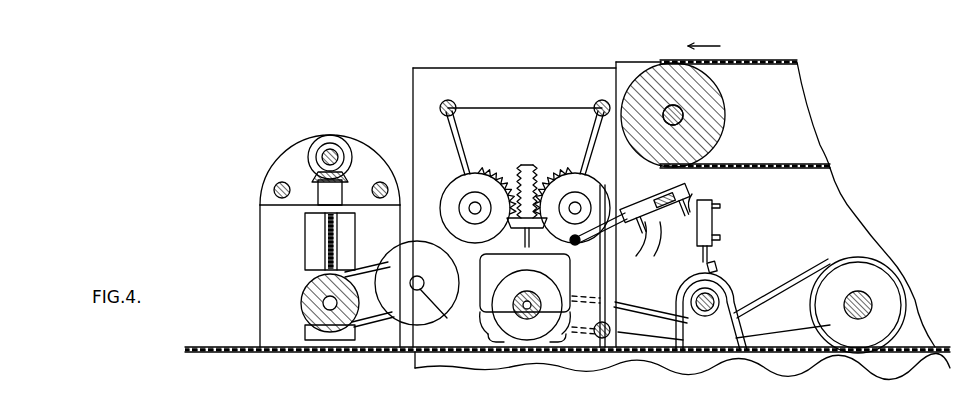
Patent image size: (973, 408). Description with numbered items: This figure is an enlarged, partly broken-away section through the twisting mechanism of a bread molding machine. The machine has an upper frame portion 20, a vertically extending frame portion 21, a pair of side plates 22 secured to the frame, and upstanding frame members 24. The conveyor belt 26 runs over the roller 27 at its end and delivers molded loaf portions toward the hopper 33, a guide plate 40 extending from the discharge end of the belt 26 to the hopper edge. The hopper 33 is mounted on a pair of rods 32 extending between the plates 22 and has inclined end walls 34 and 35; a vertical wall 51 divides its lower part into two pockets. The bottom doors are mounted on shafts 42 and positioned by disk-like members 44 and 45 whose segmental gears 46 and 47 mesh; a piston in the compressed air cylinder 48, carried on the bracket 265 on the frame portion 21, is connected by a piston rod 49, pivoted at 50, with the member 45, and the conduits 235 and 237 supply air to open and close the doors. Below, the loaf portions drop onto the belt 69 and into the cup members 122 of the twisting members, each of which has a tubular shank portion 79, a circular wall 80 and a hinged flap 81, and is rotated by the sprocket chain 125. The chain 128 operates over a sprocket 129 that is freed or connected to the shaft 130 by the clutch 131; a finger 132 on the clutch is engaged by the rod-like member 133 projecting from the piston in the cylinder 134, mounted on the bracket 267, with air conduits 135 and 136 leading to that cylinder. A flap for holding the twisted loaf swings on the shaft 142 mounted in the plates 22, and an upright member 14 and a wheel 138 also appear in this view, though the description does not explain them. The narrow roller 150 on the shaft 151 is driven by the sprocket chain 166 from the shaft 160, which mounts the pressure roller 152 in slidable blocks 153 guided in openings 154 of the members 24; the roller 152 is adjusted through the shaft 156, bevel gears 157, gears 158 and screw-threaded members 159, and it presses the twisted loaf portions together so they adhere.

The slide bar 14 is at (600, 282).
The upper frame portion 20 is at (630, 72).
The vertically extending frame portion 21 is at (848, 222).
The side plates 22 is at (444, 78).
The upstanding frame members 24 is at (272, 250).
The conveyor belt 26 is at (735, 60).
The roller 27 is at (702, 90).
The rods 32 is at (440, 108).
The hopper 33 is at (472, 106).
The inclined end wall 34 is at (460, 152).
The inclined end wall 35 is at (588, 152).
The guide plate 40 is at (615, 68).
The shafts 42 is at (470, 208).
The disk-like member 44 is at (460, 197).
The disk-like member 45 is at (587, 190).
The segmental gear 46 is at (516, 170).
The segmental gear 47 is at (531, 168).
The compressed air cylinder 48 is at (666, 191).
The piston rod 49 is at (624, 214).
The pivot 50 is at (577, 245).
The vertical wall 51 is at (522, 243).
The belt 69 is at (328, 353).
The tubular shank portion 79 is at (542, 342).
The upstanding circular wall 80 is at (527, 342).
The flap 81 is at (496, 278).
The cup members 122 is at (496, 345).
The sprocket chain 125 is at (805, 269).
The chain 128 is at (738, 329).
The sprocket 129 is at (696, 303).
The shaft 130 is at (700, 297).
The clutch 131 is at (733, 292).
The finger 132 is at (716, 267).
The rod-like member 133 is at (710, 254).
The cylinder 134 is at (712, 222).
The air conduit 135 is at (716, 205).
The air conduit 136 is at (716, 238).
The pulley 138 is at (884, 292).
The shaft 142 is at (604, 340).
The narrow roller 150 is at (396, 257).
The shaft 151 is at (444, 306).
The pressure roller 152 is at (318, 293).
The slidable blocks 153 is at (312, 276).
The openings 154 is at (312, 226).
The shaft 156 is at (323, 152).
The bevel gears 157 is at (346, 152).
The gears 158 is at (315, 177).
The screw-threaded members 159 is at (326, 242).
The shaft 160 is at (306, 306).
The sprocket chain 166 is at (373, 330).
The conduit 235 is at (638, 250).
The conduit 237 is at (715, 194).
The bracket 265 is at (671, 250).
The bracket 267 is at (694, 224).